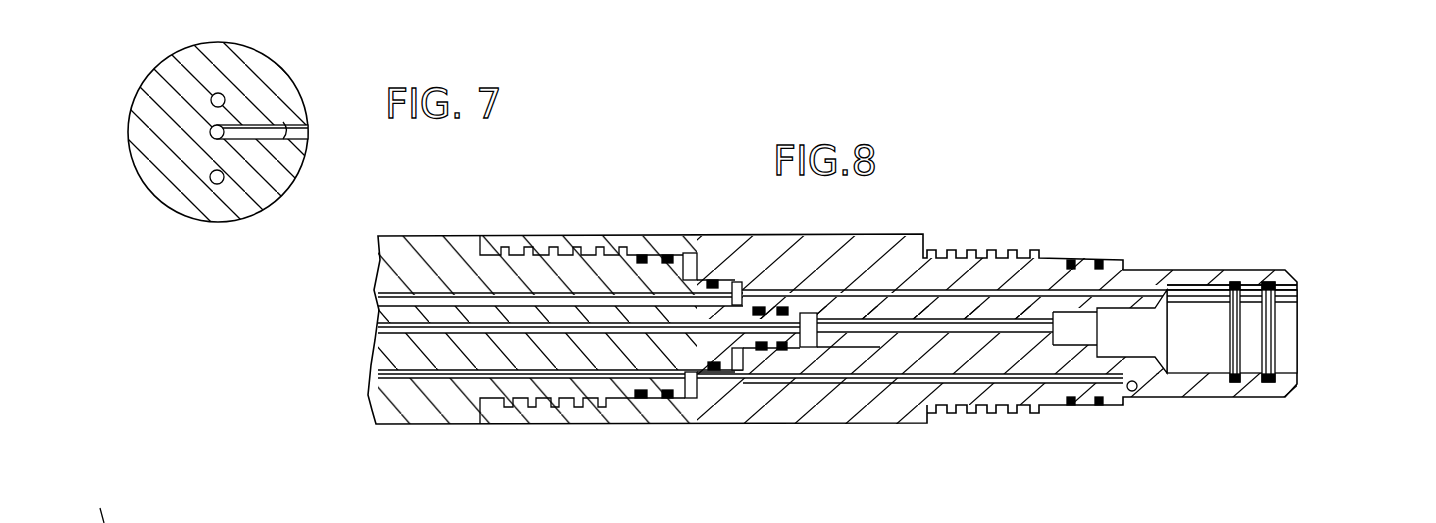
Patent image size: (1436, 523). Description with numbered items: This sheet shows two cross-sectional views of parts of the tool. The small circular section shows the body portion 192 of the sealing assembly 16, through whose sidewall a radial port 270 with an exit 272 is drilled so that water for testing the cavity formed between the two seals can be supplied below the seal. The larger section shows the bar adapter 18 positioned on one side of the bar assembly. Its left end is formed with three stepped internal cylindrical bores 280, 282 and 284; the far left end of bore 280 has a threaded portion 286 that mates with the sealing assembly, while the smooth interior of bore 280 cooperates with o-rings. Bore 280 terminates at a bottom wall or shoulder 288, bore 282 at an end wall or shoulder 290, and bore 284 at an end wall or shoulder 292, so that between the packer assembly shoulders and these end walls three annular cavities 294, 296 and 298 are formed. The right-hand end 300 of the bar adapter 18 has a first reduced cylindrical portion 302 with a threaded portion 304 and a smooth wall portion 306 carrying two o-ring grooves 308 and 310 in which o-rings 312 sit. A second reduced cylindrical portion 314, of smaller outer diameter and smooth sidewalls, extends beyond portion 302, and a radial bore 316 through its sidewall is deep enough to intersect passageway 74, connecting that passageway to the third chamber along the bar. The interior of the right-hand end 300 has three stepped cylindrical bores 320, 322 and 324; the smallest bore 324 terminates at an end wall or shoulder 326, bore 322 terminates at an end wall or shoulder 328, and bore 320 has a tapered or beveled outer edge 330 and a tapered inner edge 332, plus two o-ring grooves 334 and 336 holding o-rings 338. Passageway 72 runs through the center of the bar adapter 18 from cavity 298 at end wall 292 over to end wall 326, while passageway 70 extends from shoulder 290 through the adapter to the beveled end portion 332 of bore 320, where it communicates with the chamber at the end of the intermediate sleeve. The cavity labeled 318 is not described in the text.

In FIG. 8, the sealing assembly 16 is at (470, 188).
In FIG. 7, the bar adapter 18 is at (198, 282).
In FIG. 8, the bar adapter 18 is at (776, 446).
In FIG. 7, the passageway 70 is at (224, 96).
In FIG. 8, the passageway 70 is at (378, 300).
In FIG. 7, the passageway 72 is at (209, 136).
In FIG. 8, the passageway 72 is at (378, 333).
In FIG. 7, the passageway 74 is at (218, 184).
In FIG. 8, the passageway 74 is at (374, 372).
In FIG. 8, the body portion 192 is at (414, 236).
In FIG. 7, the radial port 270 is at (283, 142).
In FIG. 7, the exit 272 is at (318, 133).
In FIG. 8, the internal cylindrical bore 280 is at (566, 254).
In FIG. 8, the internal cylindrical bore 282 is at (688, 265).
In FIG. 8, the internal cylindrical bore 284 is at (798, 298).
In FIG. 8, the threaded portion 286 is at (500, 247).
In FIG. 8, the bottom wall or shoulder 288 is at (737, 290).
In FIG. 8, the end wall or shoulder 290 is at (806, 325).
In FIG. 8, the end wall or shoulder 292 is at (820, 292).
In FIG. 8, the annular cavity 294 is at (652, 430).
In FIG. 8, the annular cavity 296 is at (712, 430).
In FIG. 8, the annular cavity 298 is at (826, 430).
In FIG. 8, the right-hand end 300 is at (1150, 192).
In FIG. 8, the first reduced cylindrical portion 302 is at (1060, 232).
In FIG. 8, the threaded portion 304 is at (962, 256).
In FIG. 8, the smooth wall portion 306 is at (1108, 261).
In FIG. 8, the o-ring groove 308 is at (1070, 413).
In FIG. 8, the o-ring groove 310 is at (1100, 413).
In FIG. 8, the o-rings 312 is at (1071, 259).
In FIG. 8, the second reduced cylindrical portion 314 is at (1288, 255).
In FIG. 8, the radial bore 316 is at (1131, 392).
In FIG. 8, the cavity 318 is at (1232, 280).
In FIG. 8, the stepped cylindrical bore 320 is at (1300, 287).
In FIG. 8, the stepped cylindrical bore 322 is at (1168, 325).
In FIG. 8, the stepped cylindrical bore 324 is at (1024, 384).
In FIG. 8, the end wall or shoulder 326 is at (1055, 330).
In FIG. 8, the end wall or shoulder 328 is at (1106, 346).
In FIG. 8, the tapered or beveled outer edge 330 is at (1292, 366).
In FIG. 8, the tapered inner edge 332 is at (1165, 360).
In FIG. 8, the o-ring groove 334 is at (1276, 330).
In FIG. 8, the o-ring groove 336 is at (1234, 384).
In FIG. 8, the o-rings 338 is at (1268, 384).